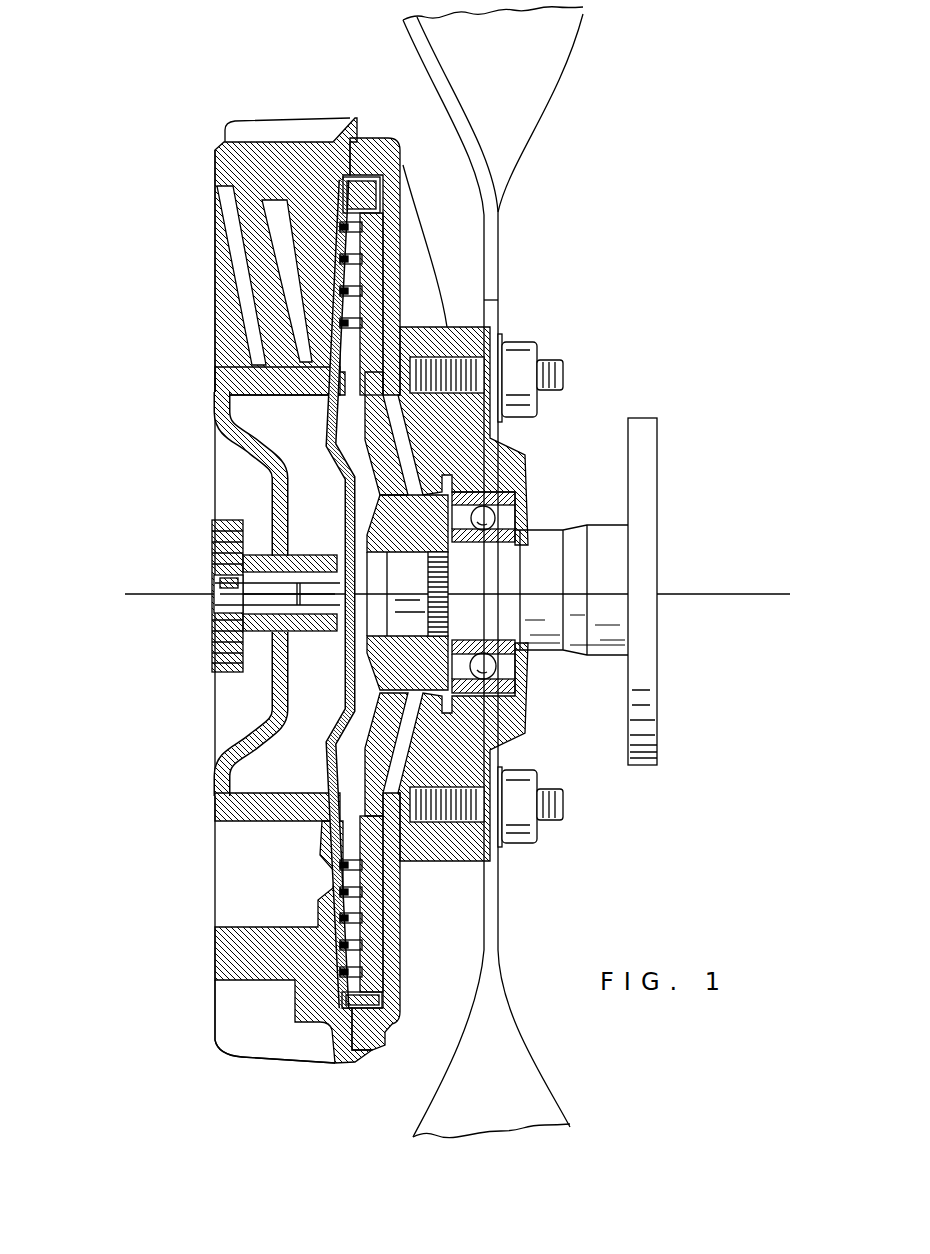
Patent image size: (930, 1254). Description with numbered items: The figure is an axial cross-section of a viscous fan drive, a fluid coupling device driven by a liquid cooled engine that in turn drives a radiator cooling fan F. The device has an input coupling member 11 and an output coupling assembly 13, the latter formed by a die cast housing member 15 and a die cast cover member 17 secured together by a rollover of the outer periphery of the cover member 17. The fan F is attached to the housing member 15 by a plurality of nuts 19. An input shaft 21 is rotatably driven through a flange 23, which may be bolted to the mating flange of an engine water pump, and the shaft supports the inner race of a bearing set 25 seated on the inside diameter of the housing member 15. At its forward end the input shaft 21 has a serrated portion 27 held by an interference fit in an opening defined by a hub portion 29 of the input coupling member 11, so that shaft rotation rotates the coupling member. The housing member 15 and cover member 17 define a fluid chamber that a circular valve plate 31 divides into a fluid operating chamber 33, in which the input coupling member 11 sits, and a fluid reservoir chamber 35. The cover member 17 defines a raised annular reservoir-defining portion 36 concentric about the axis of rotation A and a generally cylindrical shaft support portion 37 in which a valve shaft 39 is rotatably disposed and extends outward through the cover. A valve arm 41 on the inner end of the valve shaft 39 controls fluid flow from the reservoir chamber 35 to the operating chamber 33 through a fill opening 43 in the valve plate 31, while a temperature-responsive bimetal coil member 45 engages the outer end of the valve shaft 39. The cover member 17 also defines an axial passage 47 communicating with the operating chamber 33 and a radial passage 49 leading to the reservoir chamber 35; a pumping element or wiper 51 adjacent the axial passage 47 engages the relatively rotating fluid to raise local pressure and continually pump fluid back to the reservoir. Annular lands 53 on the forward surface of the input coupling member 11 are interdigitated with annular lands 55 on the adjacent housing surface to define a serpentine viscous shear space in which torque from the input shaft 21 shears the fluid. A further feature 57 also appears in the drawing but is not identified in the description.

The input coupling member 11 is at (404, 463).
The output coupling assembly 13 is at (444, 246).
The housing member 15 is at (484, 300).
The cover member 17 is at (251, 571).
The nuts 19 is at (538, 345).
The input shaft 21 is at (607, 550).
The flange 23 is at (650, 680).
The bearing set 25 is at (512, 665).
The serrated portion 27 is at (445, 597).
The hub portion 29 is at (432, 645).
The valve plate 31 is at (352, 508).
The fluid operating chamber 33 is at (405, 437).
The fluid reservoir chamber 35 is at (264, 714).
The reservoir-defining portion 36 is at (238, 803).
The shaft support portion 37 is at (330, 628).
The valve shaft 39 is at (228, 597).
The valve arm 41 is at (328, 470).
The fill opening 43 is at (325, 406).
The coil member 45 is at (238, 565).
The axial passage 47 is at (310, 186).
The radial passage 49 is at (280, 255).
The pumping element 51 is at (373, 160).
The annular lands 53 is at (320, 853).
The annular lands 55 is at (335, 918).
The lower chamber 57 is at (235, 893).
The axis of rotation A is at (745, 592).
The radiator cooling fan F is at (520, 80).